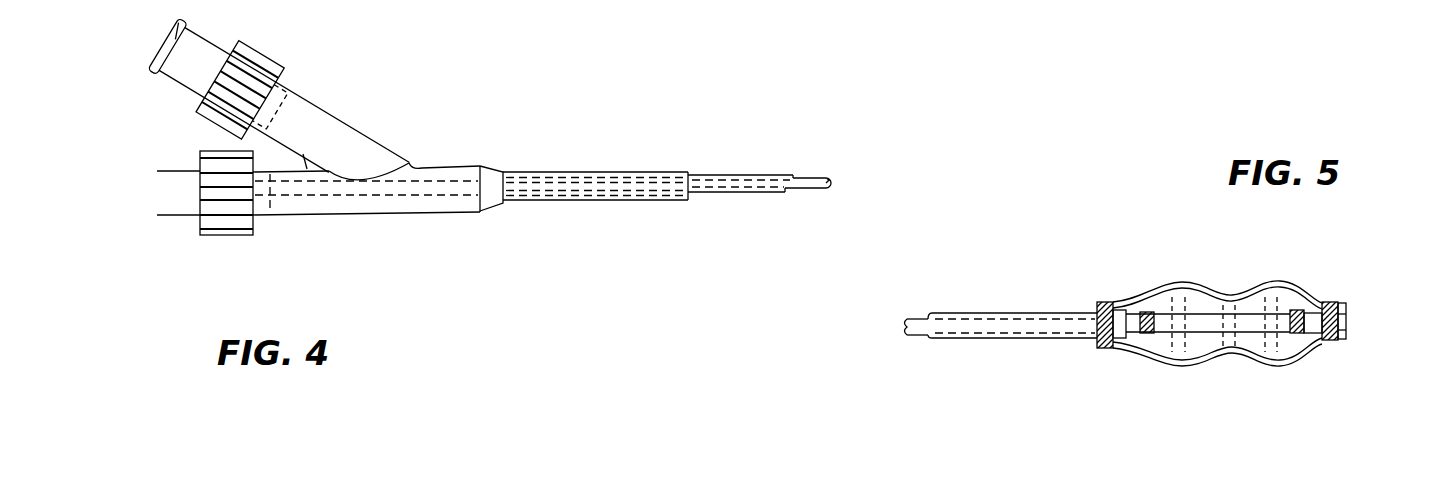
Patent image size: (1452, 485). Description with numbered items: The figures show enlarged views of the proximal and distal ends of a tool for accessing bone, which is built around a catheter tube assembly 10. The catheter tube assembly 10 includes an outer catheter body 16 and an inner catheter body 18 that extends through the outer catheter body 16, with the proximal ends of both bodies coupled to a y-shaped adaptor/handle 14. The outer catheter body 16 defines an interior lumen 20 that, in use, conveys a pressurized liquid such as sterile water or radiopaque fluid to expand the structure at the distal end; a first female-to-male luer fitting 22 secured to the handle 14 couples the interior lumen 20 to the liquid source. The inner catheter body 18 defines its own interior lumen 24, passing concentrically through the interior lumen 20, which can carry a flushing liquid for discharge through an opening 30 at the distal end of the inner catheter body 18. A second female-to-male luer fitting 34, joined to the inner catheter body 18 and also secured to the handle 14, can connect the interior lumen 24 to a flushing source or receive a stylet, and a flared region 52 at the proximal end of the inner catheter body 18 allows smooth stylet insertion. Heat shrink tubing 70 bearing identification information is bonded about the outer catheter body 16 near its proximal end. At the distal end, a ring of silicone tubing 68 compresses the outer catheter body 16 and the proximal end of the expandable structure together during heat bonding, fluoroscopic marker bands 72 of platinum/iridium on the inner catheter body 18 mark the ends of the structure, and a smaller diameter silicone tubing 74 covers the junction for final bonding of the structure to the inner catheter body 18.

In FIG. 4, the catheter tube assembly 10 is at (664, 156).
In FIG. 4, the y-shaped adaptor/handle 14 is at (446, 158).
In FIG. 4, the outer catheter body 16 is at (757, 175).
In FIG. 5, the outer catheter body 16 is at (1067, 312).
In FIG. 4, the inner catheter body 18 is at (805, 190).
In FIG. 5, the inner catheter body 18 is at (1312, 303).
In FIG. 4, the interior lumen 20 is at (795, 177).
In FIG. 5, the interior lumen 20 is at (927, 313).
In FIG. 4, the first female-to-male luer fitting 22 is at (258, 53).
In FIG. 4, the interior lumen 24 is at (829, 182).
In FIG. 5, the interior lumen 24 is at (910, 324).
In FIG. 5, the opening 30 is at (1346, 323).
In FIG. 4, the second female-to-male luer fitting 34 is at (228, 236).
In FIG. 4, the flared region 52 is at (283, 216).
In FIG. 5, the ring of silicone tubing 68 is at (1107, 349).
In FIG. 4, the heat shrink tubing 70 is at (552, 172).
In FIG. 5, the fluoroscopic marker bands 72 is at (1147, 312).
In FIG. 5, the smaller diameter silicone tubing 74 is at (1323, 342).